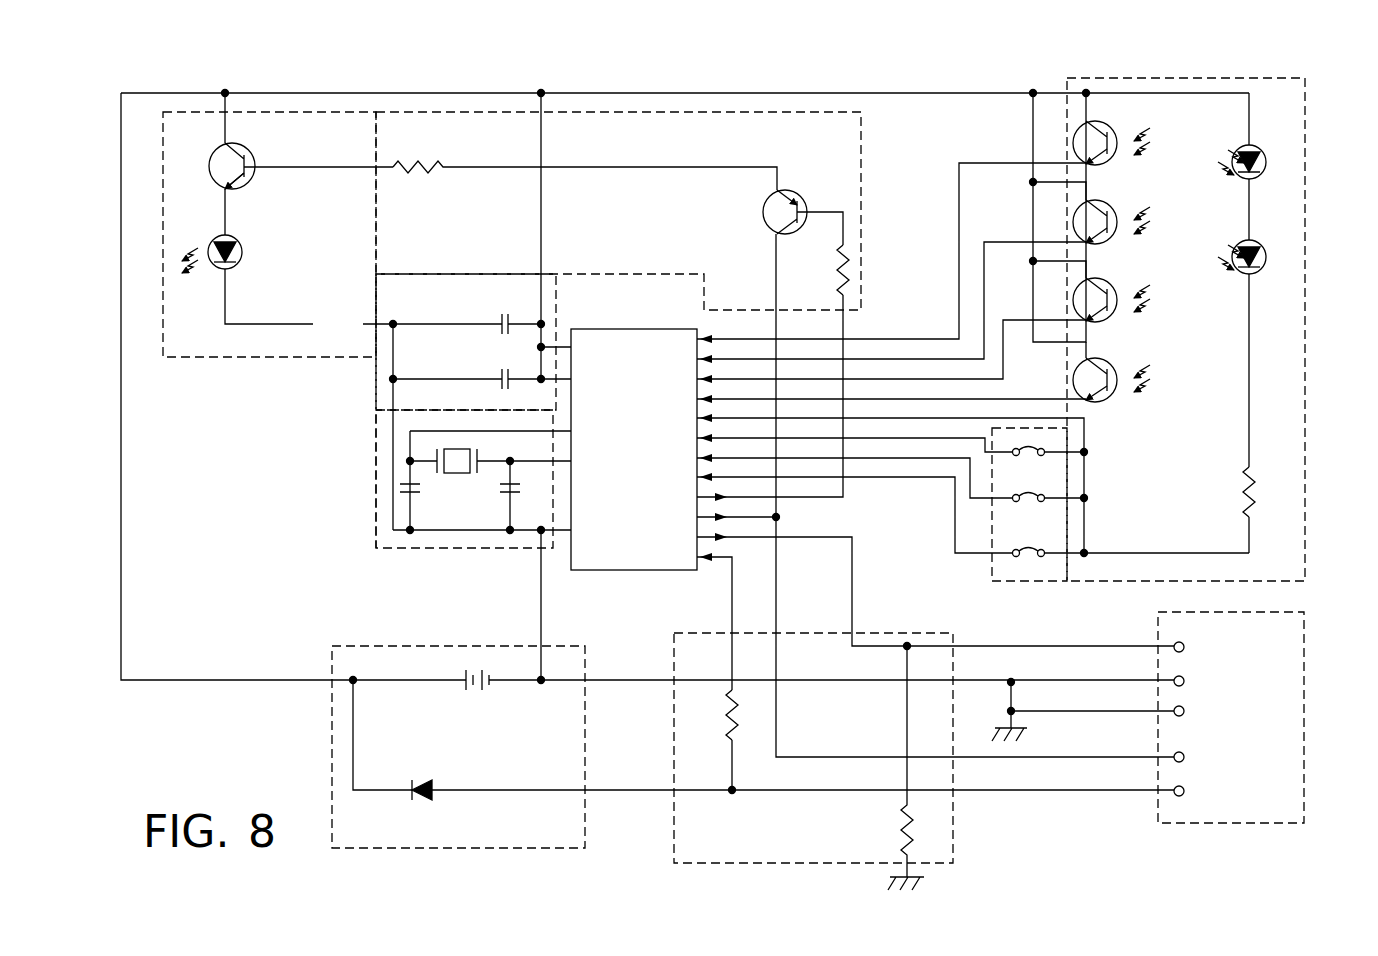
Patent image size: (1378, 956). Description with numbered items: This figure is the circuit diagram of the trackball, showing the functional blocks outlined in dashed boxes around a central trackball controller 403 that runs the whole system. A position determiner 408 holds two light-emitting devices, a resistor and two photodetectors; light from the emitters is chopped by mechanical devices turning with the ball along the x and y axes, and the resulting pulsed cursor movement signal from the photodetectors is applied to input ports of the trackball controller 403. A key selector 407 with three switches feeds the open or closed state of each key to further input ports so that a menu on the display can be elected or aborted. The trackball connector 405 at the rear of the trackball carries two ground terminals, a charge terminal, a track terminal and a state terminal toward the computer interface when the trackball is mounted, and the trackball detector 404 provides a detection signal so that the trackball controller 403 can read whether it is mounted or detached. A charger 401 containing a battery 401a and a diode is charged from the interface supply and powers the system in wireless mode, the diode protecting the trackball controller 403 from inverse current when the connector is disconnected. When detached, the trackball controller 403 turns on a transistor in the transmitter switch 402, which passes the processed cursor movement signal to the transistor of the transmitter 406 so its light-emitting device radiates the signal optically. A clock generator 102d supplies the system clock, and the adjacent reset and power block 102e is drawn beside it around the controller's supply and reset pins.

The charger 401 is at (420, 747).
The battery 401a is at (480, 700).
The transmitter switch 402 is at (852, 178).
The trackball controller 403 is at (632, 572).
The trackball detector 404 is at (685, 842).
The trackball connector 405 is at (1232, 823).
The transmitter 406 is at (252, 357).
The key selector 407 is at (1050, 577).
The position determiner 408 is at (1278, 92).
The clock generator 102d is at (380, 517).
The reset / power circuit 102e is at (457, 278).